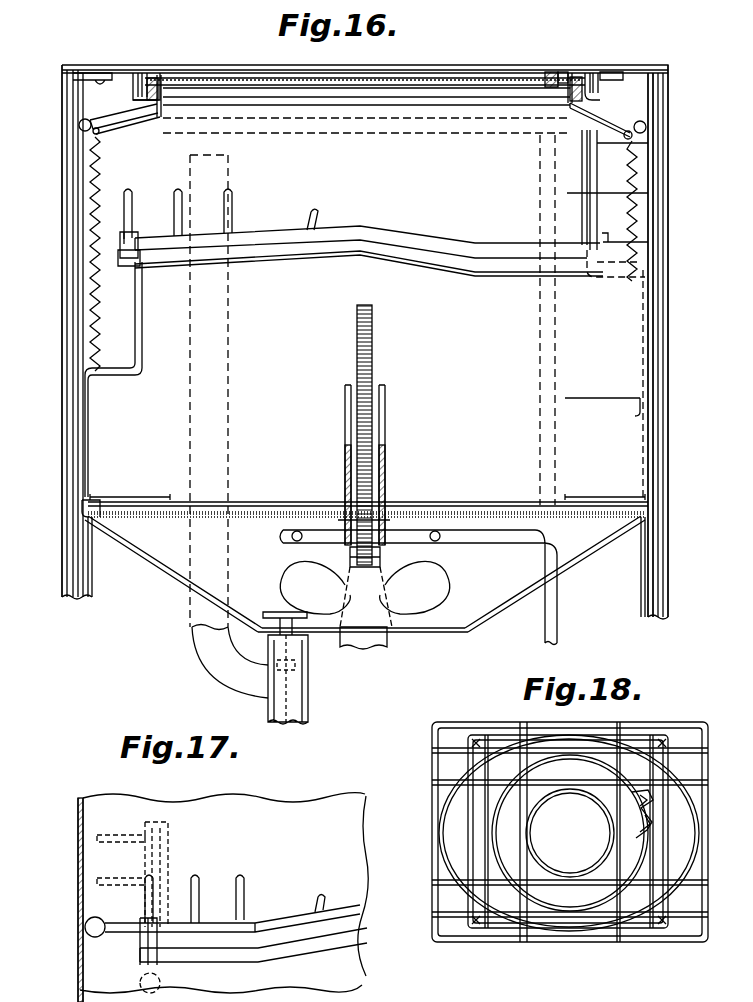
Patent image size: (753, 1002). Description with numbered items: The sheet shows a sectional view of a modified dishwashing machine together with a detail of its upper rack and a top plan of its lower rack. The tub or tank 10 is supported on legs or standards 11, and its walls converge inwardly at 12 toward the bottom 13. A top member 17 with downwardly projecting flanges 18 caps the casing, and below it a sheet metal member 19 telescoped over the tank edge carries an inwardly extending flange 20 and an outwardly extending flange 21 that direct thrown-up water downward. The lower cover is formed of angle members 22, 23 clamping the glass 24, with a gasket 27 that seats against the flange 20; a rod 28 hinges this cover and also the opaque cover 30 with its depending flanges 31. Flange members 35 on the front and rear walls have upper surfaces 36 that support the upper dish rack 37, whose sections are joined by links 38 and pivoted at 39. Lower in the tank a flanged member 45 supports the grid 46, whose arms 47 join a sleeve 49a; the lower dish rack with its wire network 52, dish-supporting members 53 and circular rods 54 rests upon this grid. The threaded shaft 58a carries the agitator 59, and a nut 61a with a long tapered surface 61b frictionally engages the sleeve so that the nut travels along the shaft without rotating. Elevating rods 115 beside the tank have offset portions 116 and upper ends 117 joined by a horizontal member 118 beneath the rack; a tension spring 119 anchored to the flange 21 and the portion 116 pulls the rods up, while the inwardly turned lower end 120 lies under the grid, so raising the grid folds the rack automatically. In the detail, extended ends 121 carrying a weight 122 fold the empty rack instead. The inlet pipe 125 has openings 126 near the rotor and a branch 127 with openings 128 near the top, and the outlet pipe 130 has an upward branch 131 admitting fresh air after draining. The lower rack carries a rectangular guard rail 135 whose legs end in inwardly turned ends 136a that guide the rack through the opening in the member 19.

In FIG. 16, the tub or tank 10 is at (660, 323).
In FIG. 17, the tub or tank 10 is at (78, 869).
In FIG. 16, the legs or standards 11 is at (650, 557).
In FIG. 16, the converging lower wall portion 12 is at (520, 604).
In FIG. 16, the bottom 13 is at (452, 634).
In FIG. 16, the top member 17 is at (95, 68).
In FIG. 16, the downwardly projecting flanges 18 is at (62, 78).
In FIG. 16, the sheet metal member 19 is at (112, 70).
In FIG. 16, the inwardly extending flange 20 is at (150, 106).
In FIG. 16, the outwardly extending flange 21 is at (140, 122).
In FIG. 16, the flanged or angle member 22 is at (555, 88).
In FIG. 16, the flanged or angle member 23 is at (560, 72).
In FIG. 16, the glass or transparent material 24 is at (436, 78).
In FIG. 16, the gasket 27 is at (598, 102).
In FIG. 16, the rod 28 is at (628, 70).
In FIG. 16, the opaque cover 30 is at (492, 78).
In FIG. 16, the downwardly depending flanges 31 is at (590, 73).
In FIG. 16, the flange members 35 is at (500, 276).
In FIG. 17, the flange members 35 is at (355, 939).
In FIG. 16, the upper surfaces 36 is at (494, 243).
In FIG. 17, the upper surfaces 36 is at (346, 908).
In FIG. 16, the upper dish rack 37 is at (152, 236).
In FIG. 17, the upper dish rack 37 is at (212, 920).
In FIG. 16, the links 38 is at (245, 234).
In FIG. 16, the pivot 39 is at (124, 238).
In FIG. 16, the flanged member 45 is at (88, 520).
In FIG. 16, the supporting grid 46 is at (144, 489).
In FIG. 16, the arms 47 is at (203, 500).
In FIG. 16, the sleeve 49a is at (386, 474).
In FIG. 18, the grid or wire network 52 is at (698, 872).
In FIG. 18, the dish-supporting members 53 is at (652, 832).
In FIG. 18, the circular rods 54 is at (562, 770).
In FIG. 16, the shaft 58a is at (366, 360).
In FIG. 16, the agitator 59 is at (440, 572).
In FIG. 16, the nut 61a is at (388, 530).
In FIG. 16, the tapered surface 61b is at (342, 530).
In FIG. 16, the elevating rods 115 is at (86, 442).
In FIG. 16, the inwardly offset portion 116 is at (120, 378).
In FIG. 16, the upper ends 117 is at (142, 336).
In FIG. 16, the horizontal member 118 is at (140, 258).
In FIG. 16, the tension spring 119 is at (100, 194).
In FIG. 16, the inwardly turned lower end 120 is at (82, 506).
In FIG. 17, the extended ends 121 is at (126, 948).
In FIG. 17, the weight 122 is at (100, 917).
In FIG. 16, the inlet pipe 125 is at (558, 620).
In FIG. 16, the openings 126 is at (297, 530).
In FIG. 16, the branch 127 is at (556, 358).
In FIG. 16, the openings 128 is at (646, 127).
In FIG. 16, the outlet pipe 130 is at (310, 693).
In FIG. 16, the branch 131 is at (200, 612).
In FIG. 18, the guard rail 135 is at (595, 736).
In FIG. 18, the inwardly turned ends 136a is at (655, 950).